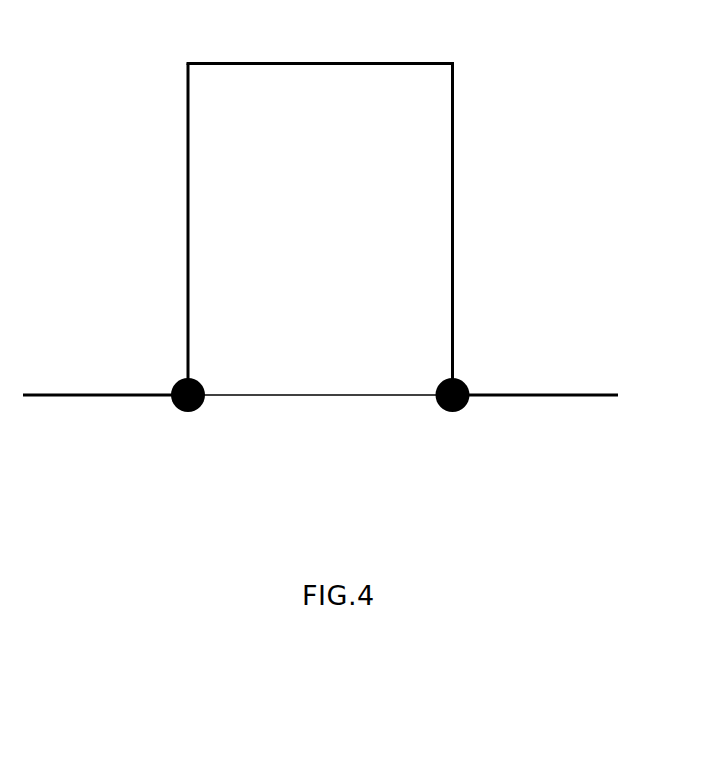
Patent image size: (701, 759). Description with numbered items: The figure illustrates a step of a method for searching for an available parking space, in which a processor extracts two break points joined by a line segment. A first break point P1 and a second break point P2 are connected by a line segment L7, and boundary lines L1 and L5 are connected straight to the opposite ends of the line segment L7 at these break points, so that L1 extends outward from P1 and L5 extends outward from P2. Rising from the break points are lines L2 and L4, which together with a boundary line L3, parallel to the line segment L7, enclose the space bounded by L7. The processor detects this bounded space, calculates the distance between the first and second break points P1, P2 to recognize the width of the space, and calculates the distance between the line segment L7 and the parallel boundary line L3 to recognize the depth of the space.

The boundary line L1 is at (105, 381).
The second line segment L2 is at (170, 230).
The boundary line L3 is at (321, 50).
The fourth line segment L4 is at (472, 230).
The boundary line L5 is at (536, 381).
The line segment L7 is at (320, 381).
The first break point P1 is at (188, 410).
The second break point P2 is at (454, 410).